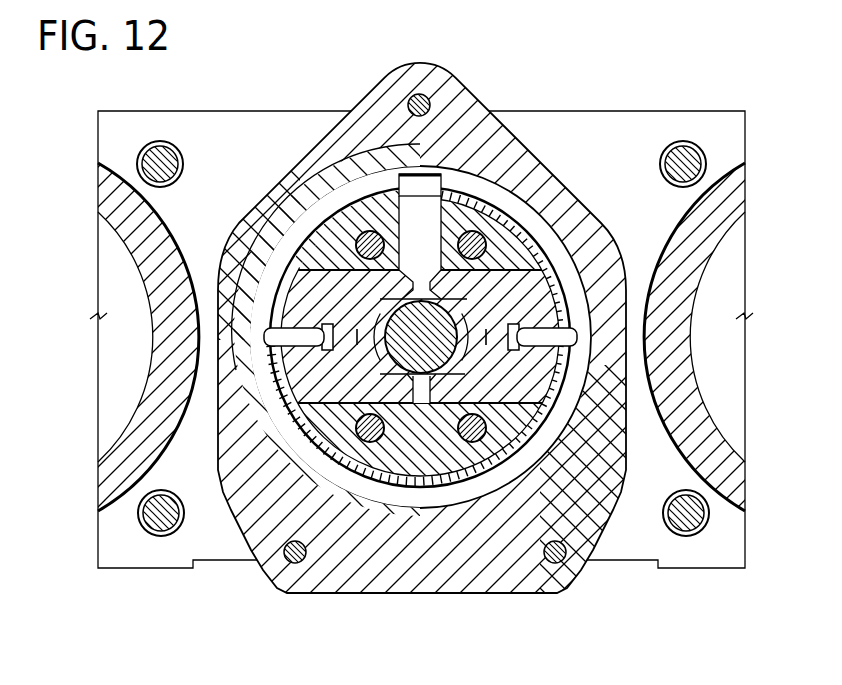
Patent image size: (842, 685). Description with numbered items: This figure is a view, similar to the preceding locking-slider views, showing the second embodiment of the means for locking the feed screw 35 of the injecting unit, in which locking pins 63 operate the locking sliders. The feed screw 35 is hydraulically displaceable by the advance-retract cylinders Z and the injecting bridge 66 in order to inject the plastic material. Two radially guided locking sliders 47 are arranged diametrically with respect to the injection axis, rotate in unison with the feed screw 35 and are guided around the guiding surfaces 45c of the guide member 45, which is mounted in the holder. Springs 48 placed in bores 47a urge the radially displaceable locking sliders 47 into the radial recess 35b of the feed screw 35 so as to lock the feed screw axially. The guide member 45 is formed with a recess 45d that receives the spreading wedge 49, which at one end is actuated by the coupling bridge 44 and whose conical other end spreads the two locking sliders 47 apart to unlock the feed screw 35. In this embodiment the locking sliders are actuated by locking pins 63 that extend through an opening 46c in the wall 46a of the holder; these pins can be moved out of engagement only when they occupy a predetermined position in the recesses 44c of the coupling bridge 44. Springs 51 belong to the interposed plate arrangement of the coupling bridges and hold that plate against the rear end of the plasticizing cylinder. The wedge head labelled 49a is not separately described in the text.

The feed screw 35 is at (610, 505).
The radial recess 35b is at (582, 272).
The coupling bridge 44 is at (480, 118).
The recesses 44c is at (262, 250).
The guide member 45 is at (410, 453).
The guiding surfaces 45c is at (358, 212).
The recess 45d is at (441, 194).
The wall 46a is at (560, 214).
The opening 46c is at (262, 344).
The locking sliders 47 is at (266, 245).
The bores 47a is at (240, 502).
The springs 48 is at (572, 396).
The spreading wedge 49 is at (432, 248).
The key head 49a is at (414, 200).
The springs 51 is at (416, 96).
The locking pins 63 is at (286, 290).
The injecting bridge 66 is at (642, 122).
The hydraulic advance-retract cylinders Z is at (147, 247).